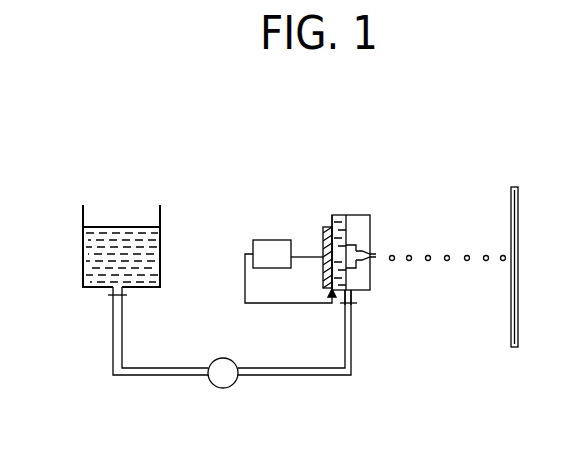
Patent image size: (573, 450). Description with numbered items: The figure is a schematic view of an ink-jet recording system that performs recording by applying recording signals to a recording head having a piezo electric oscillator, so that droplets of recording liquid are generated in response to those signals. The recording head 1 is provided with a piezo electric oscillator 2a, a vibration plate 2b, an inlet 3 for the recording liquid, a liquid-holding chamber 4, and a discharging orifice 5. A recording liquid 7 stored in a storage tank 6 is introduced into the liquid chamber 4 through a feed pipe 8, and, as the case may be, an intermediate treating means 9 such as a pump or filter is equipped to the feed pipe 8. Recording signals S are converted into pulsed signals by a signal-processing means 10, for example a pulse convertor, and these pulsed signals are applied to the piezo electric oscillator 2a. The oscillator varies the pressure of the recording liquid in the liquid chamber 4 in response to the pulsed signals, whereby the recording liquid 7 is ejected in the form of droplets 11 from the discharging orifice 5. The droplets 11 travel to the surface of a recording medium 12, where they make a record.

The recording head 1 is at (360, 215).
The piezo electric oscillator 2a is at (325, 230).
The vibration plate 2b is at (334, 215).
The inlet 3 is at (352, 290).
The liquid-holding chamber 4 is at (350, 230).
The discharging orifice 5 is at (374, 259).
The storage tank 6 is at (83, 248).
The recording liquid 7 is at (84, 281).
The feed pipe 8 is at (155, 378).
The intermediate treating means 9 is at (223, 388).
The signal-processing means 10 is at (262, 240).
The recording signals S is at (275, 232).
The droplets 11 is at (447, 252).
The recording medium 12 is at (511, 333).